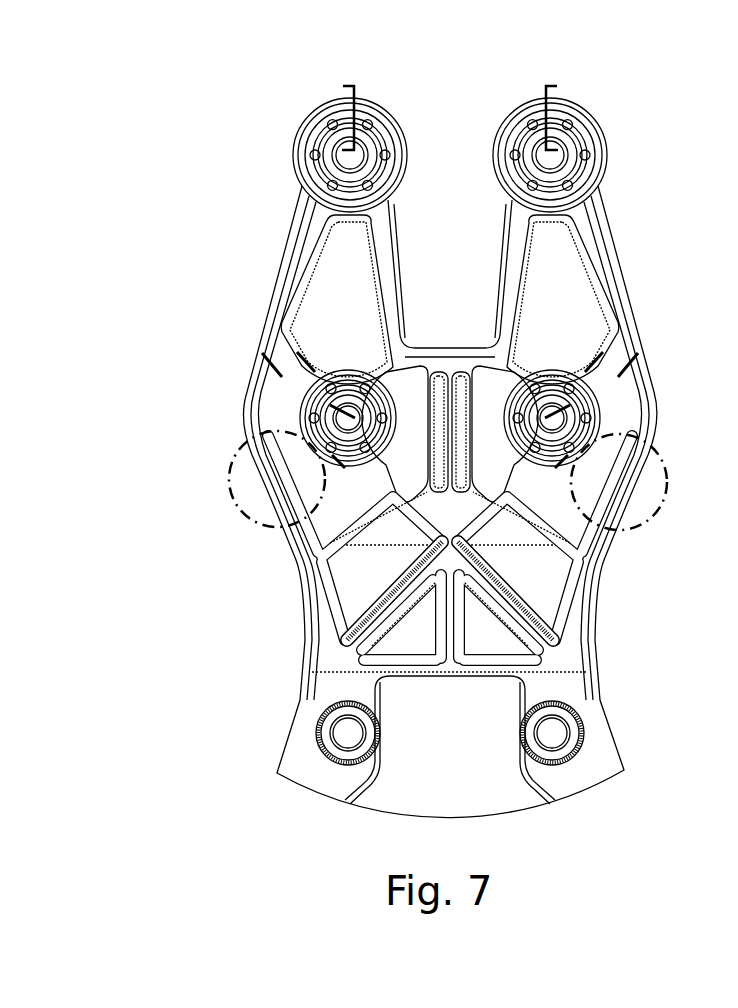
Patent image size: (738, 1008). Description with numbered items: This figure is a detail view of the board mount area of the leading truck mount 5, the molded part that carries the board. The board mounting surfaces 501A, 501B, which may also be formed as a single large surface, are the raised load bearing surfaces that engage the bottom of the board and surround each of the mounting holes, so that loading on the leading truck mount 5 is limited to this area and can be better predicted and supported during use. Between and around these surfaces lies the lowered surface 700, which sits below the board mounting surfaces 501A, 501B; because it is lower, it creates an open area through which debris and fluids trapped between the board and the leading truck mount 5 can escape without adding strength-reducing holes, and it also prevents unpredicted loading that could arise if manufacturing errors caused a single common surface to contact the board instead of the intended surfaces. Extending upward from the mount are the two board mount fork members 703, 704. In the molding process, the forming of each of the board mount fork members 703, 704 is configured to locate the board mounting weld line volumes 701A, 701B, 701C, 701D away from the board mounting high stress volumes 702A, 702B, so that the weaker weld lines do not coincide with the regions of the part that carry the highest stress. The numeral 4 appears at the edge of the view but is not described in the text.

The leading truck mount 5 is at (210, 762).
The frame 4 is at (729, 430).
The lowered surface 700 is at (497, 338).
The board mounting weld lines volume 701A is at (270, 330).
The board mounting weld lines volume 701B is at (343, 84).
The board mounting weld lines volume 701C is at (557, 83).
The board mounting weld lines volume 701D is at (632, 328).
The board mounting high stress volume 702A is at (240, 515).
The board mounting high stress volume 702B is at (625, 535).
The board mount fork member 703 is at (377, 100).
The board mount fork member 704 is at (526, 100).
The board mounting surface 501A is at (323, 200).
The board mounting surface 501B is at (578, 203).